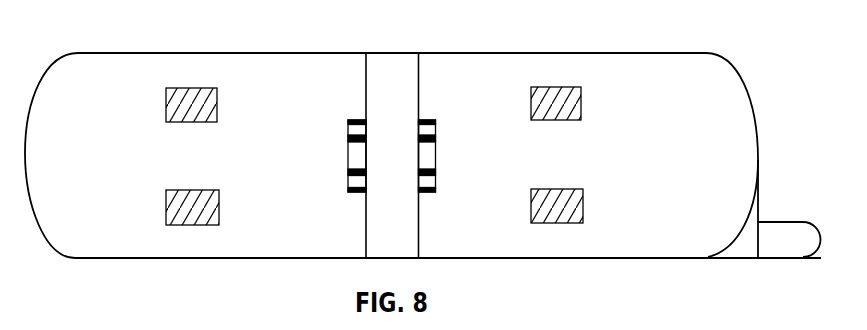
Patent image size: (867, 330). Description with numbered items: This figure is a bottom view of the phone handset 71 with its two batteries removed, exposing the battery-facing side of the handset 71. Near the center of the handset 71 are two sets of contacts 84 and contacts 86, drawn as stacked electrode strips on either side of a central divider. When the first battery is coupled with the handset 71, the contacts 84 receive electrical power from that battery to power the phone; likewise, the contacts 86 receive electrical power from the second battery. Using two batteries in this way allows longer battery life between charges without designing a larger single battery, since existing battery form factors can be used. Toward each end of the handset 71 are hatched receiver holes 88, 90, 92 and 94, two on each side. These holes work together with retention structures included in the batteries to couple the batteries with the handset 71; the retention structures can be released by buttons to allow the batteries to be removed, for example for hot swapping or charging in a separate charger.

The phone handset 71 is at (777, 83).
The contacts 84 is at (348, 182).
The contacts 86 is at (436, 182).
The receiver hole 88 is at (166, 112).
The receiver hole 90 is at (166, 215).
The receiver hole 92 is at (581, 111).
The receiver hole 94 is at (583, 213).